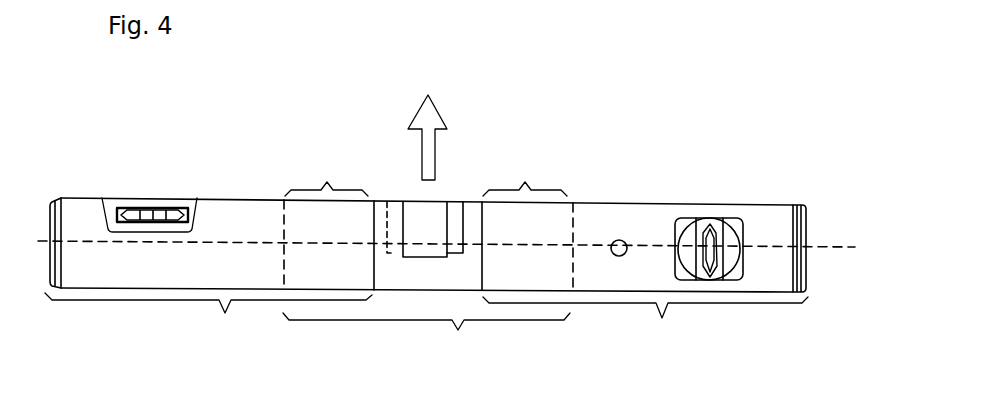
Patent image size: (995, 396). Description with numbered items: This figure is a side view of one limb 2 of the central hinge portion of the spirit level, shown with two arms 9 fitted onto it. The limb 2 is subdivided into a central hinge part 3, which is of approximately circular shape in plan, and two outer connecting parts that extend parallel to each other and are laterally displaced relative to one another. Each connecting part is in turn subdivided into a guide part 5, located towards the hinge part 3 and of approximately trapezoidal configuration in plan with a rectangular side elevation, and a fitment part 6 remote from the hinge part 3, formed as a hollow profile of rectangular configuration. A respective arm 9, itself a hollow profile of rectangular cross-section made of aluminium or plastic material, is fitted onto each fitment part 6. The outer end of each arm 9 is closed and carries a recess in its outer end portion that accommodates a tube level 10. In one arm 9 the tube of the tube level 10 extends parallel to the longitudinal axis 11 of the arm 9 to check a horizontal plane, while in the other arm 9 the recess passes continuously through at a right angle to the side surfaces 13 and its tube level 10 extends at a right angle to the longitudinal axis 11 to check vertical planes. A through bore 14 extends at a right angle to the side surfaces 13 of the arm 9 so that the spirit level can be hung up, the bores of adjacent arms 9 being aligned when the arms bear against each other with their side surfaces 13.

The limb 2 is at (458, 330).
The hinge part 3 is at (428, 275).
The guide part 5 is at (473, 218).
The fitment part 6 is at (426, 173).
The arm 9 is at (662, 337).
The tube level 10 is at (793, 337).
The longitudinal axis 11 is at (832, 247).
The side surface 13 is at (297, 288).
The through bore 14 is at (619, 240).